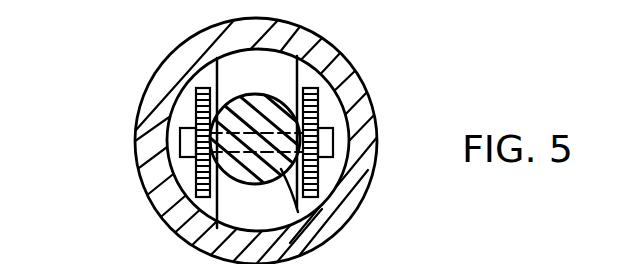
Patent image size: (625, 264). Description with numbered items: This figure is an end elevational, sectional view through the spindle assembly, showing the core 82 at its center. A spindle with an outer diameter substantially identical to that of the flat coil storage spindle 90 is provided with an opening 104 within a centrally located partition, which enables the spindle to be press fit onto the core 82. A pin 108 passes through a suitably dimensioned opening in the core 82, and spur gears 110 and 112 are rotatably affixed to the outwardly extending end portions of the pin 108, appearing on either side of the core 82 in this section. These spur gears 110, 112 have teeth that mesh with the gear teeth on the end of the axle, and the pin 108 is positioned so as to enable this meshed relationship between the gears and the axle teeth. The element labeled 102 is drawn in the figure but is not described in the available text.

The core 82 is at (318, 240).
The flat coil storage spindle 90 is at (427, 5).
The outer housing 102 is at (141, 106).
The opening 104 is at (192, 232).
The pin 108 is at (365, 104).
The spur gear 110 is at (196, 64).
The spur gear 112 is at (352, 184).